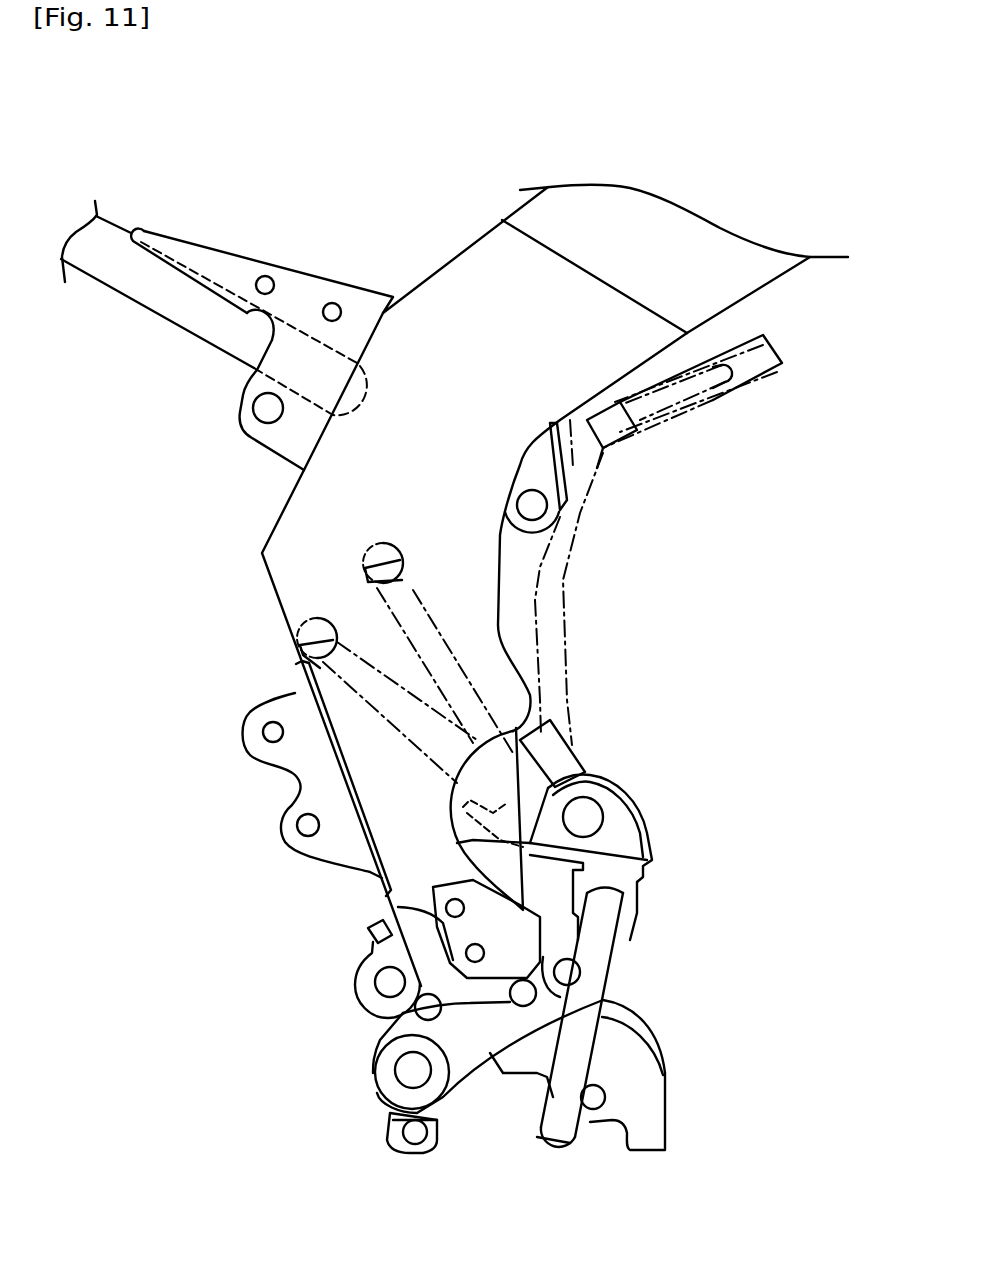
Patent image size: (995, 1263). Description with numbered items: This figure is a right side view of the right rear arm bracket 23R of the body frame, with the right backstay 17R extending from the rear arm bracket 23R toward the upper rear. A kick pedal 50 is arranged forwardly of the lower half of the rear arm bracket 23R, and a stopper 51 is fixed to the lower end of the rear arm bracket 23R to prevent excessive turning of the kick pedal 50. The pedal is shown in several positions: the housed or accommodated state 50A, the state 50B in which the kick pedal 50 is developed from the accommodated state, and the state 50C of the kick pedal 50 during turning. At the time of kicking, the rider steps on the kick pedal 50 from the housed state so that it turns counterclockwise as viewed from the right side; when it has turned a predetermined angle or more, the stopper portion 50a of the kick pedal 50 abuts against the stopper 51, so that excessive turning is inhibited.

The right backstay 17R is at (134, 288).
The right rear arm bracket 23R is at (303, 513).
The kick pedal 50 is at (597, 990).
The housed state of the kick pedal 50A is at (580, 525).
The developed state of the kick pedal 50B is at (417, 593).
The turning state of the kick pedal 50C is at (303, 677).
The stopper portion 50a is at (457, 845).
The stopper 51 is at (390, 908).